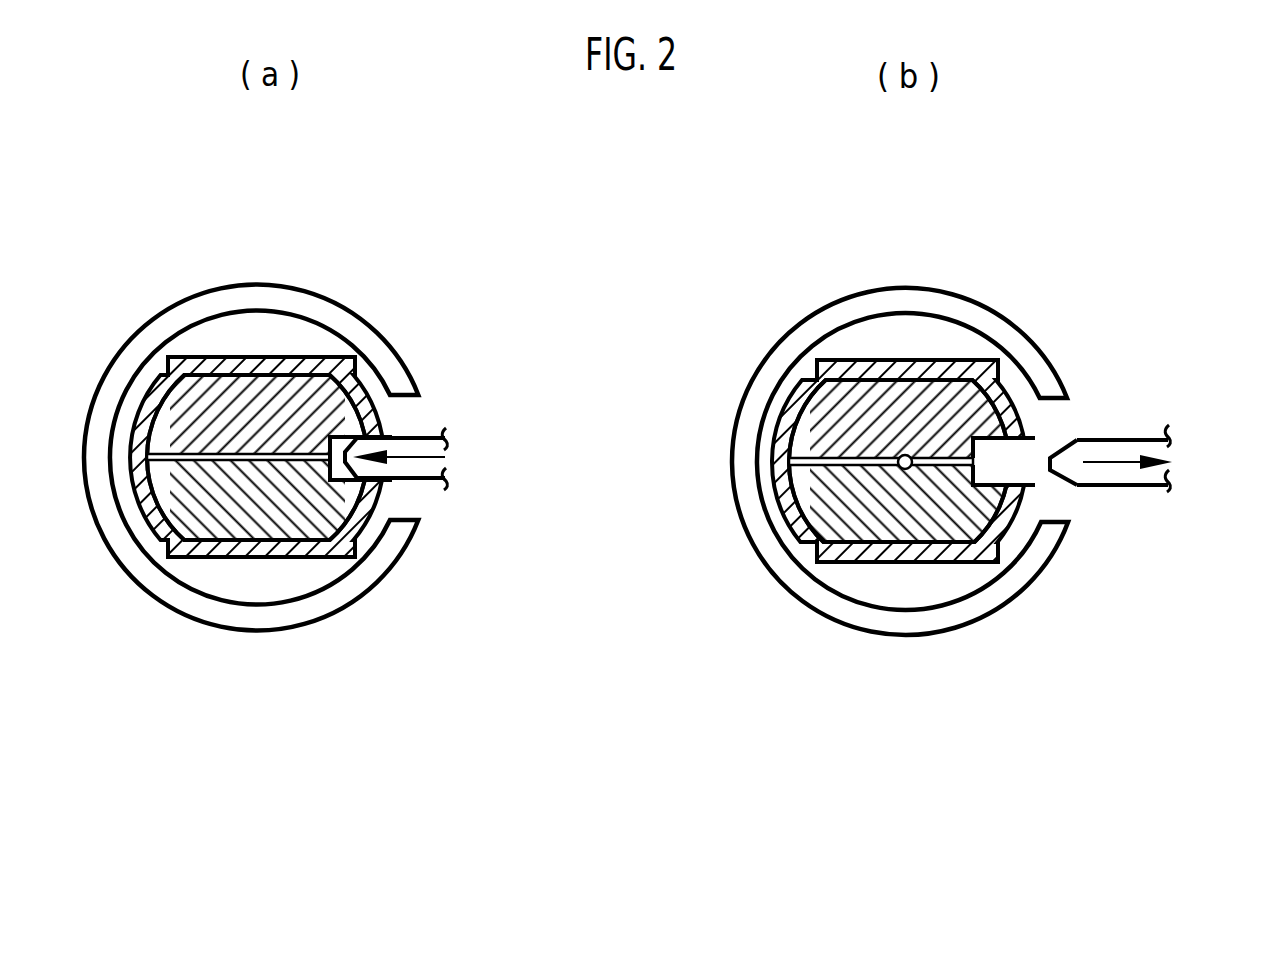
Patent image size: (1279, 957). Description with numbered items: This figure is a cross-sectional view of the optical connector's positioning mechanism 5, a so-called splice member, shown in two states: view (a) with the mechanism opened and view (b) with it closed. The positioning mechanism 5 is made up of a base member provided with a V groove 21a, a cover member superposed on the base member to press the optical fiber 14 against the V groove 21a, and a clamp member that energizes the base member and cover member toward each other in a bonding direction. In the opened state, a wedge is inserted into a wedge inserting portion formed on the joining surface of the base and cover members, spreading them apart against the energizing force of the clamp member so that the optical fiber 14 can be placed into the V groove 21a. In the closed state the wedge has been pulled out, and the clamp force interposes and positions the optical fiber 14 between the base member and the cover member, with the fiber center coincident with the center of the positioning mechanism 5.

The positioning mechanism 5 is at (325, 465).
The optical fiber 14 is at (908, 470).
The V groove 21a is at (273, 459).